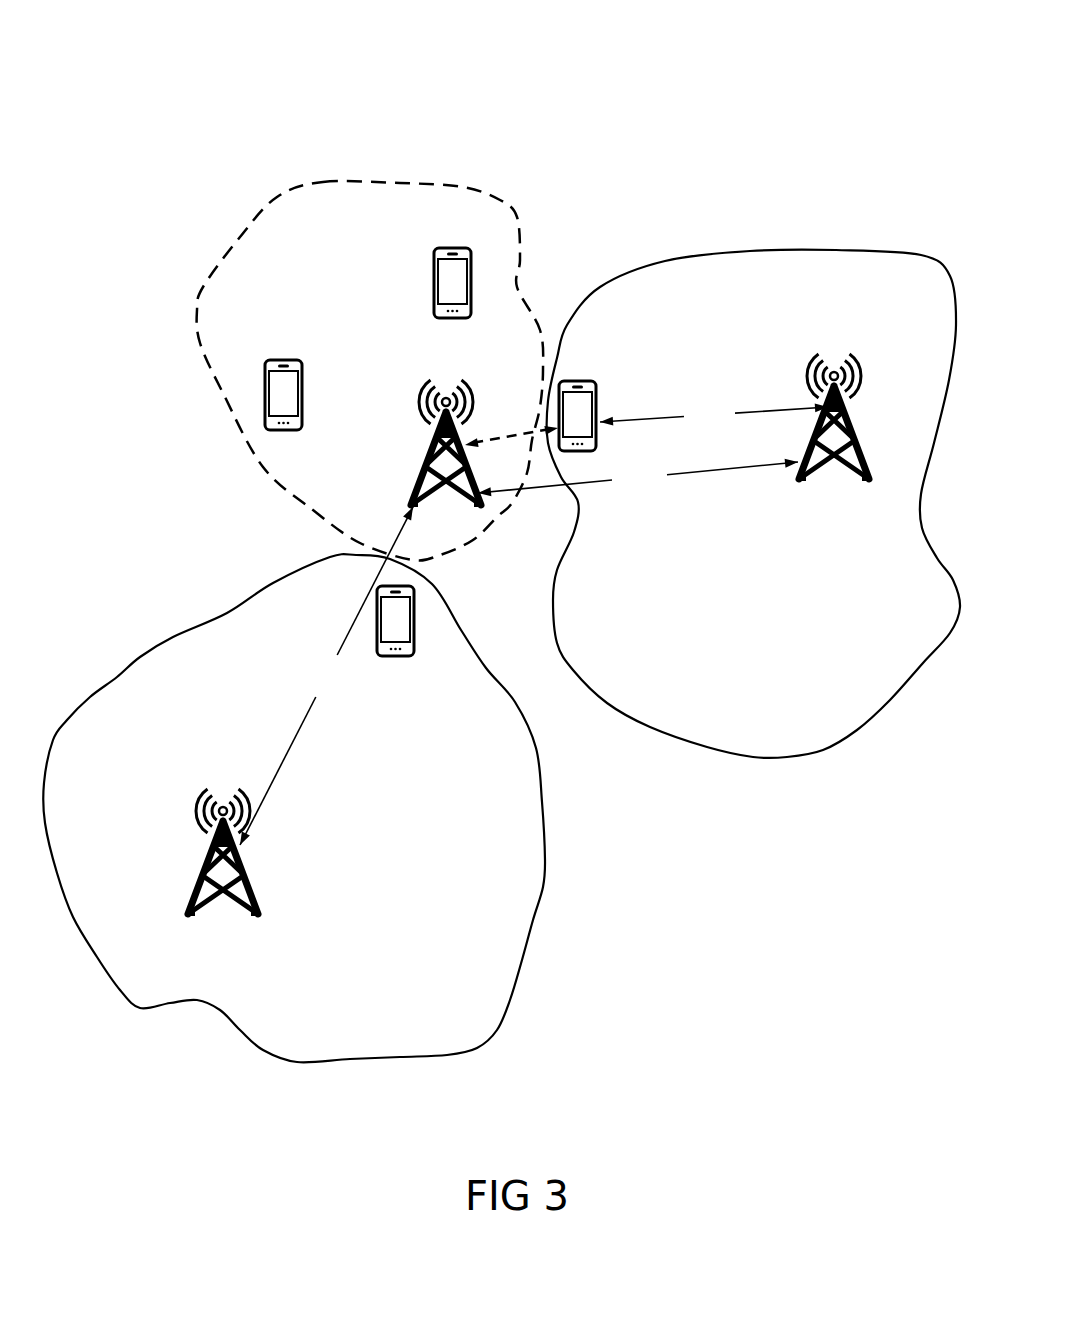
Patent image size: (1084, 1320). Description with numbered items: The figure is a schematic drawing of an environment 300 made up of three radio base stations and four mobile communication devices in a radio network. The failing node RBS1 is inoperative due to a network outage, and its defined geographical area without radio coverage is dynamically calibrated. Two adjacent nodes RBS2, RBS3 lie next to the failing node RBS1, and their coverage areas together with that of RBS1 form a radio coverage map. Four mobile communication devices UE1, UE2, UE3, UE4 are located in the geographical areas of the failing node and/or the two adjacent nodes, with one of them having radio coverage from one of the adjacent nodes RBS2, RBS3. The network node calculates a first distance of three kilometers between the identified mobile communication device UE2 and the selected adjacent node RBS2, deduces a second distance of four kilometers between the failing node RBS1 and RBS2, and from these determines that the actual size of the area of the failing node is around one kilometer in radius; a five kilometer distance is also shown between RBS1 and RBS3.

The environment 300 is at (730, 85).
The failing node RBS1 is at (446, 459).
The adjacent node RBS2 is at (834, 435).
The adjacent node RBS3 is at (223, 868).
The mobile communication device UE1 is at (452, 299).
The mobile communication device UE2 is at (578, 433).
The mobile communication device UE3 is at (396, 637).
The mobile communication device UE4 is at (283, 411).